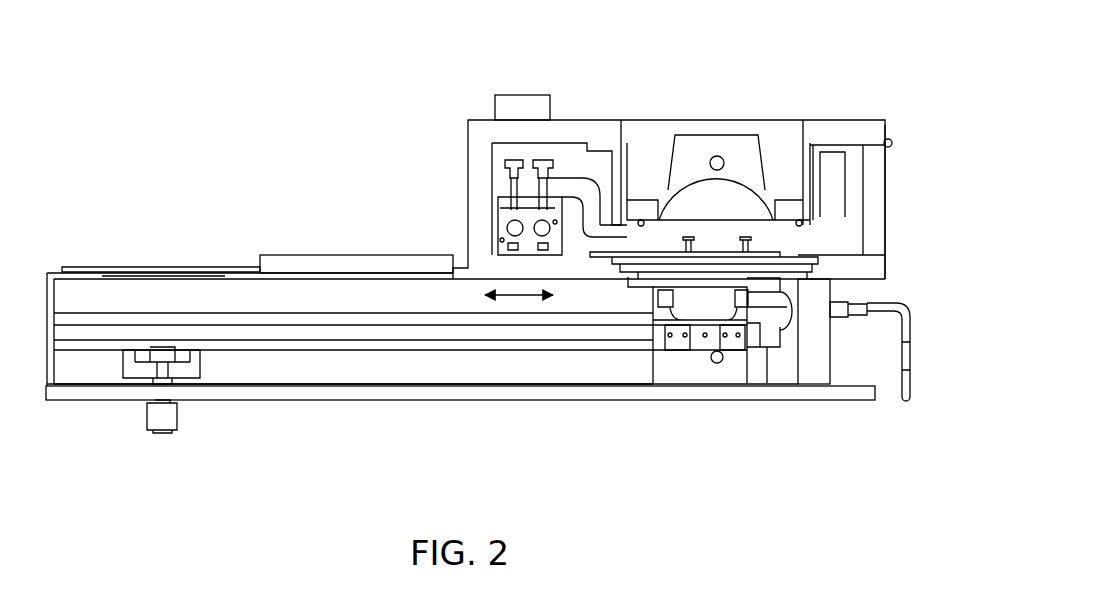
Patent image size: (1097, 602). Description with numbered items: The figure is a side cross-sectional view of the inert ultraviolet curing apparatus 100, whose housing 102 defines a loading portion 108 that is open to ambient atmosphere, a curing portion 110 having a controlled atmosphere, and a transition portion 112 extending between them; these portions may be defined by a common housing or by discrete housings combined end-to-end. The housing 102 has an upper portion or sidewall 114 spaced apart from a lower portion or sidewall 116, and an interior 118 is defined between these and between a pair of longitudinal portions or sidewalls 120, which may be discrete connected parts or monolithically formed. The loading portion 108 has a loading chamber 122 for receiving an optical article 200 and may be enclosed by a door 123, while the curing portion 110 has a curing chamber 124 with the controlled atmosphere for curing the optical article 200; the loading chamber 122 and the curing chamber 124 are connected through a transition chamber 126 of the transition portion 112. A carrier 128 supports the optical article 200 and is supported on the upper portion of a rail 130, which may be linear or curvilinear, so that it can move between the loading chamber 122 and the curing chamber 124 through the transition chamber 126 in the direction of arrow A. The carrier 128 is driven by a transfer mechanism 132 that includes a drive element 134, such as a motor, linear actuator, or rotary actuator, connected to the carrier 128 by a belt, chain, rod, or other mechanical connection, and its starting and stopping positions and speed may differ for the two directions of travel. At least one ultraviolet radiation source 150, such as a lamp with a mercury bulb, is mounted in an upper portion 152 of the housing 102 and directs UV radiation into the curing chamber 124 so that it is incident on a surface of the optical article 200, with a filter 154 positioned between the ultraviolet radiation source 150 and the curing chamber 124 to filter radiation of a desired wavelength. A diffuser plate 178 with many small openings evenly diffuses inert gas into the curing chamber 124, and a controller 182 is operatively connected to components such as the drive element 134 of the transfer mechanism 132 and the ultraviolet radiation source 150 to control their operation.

The curing apparatus 100 is at (208, 88).
The housing 102 is at (458, 173).
The loading portion 108 is at (77, 366).
The curing portion 110 is at (643, 302).
The transition portion 112 is at (414, 367).
The upper portion or sidewall 114 is at (332, 262).
The lower portion or sidewall 116 is at (245, 393).
The interior 118 is at (351, 367).
The longitudinal portions or sidewalls 120 is at (880, 220).
The loading chamber 122 is at (137, 306).
The door 123 is at (135, 267).
The curing chamber 124 is at (700, 382).
The transition chamber 126 is at (447, 307).
The carrier 128 is at (736, 343).
The rail 130 is at (540, 342).
The transfer mechanism 132 is at (210, 364).
The drive element 134 is at (165, 412).
The ultraviolet radiation source 150 is at (735, 155).
The upper portion of the housing 152 is at (878, 170).
The filter 154 is at (797, 255).
The diffuser plate 178 is at (782, 362).
The controller 182 is at (527, 103).
The optical article 200 is at (710, 300).